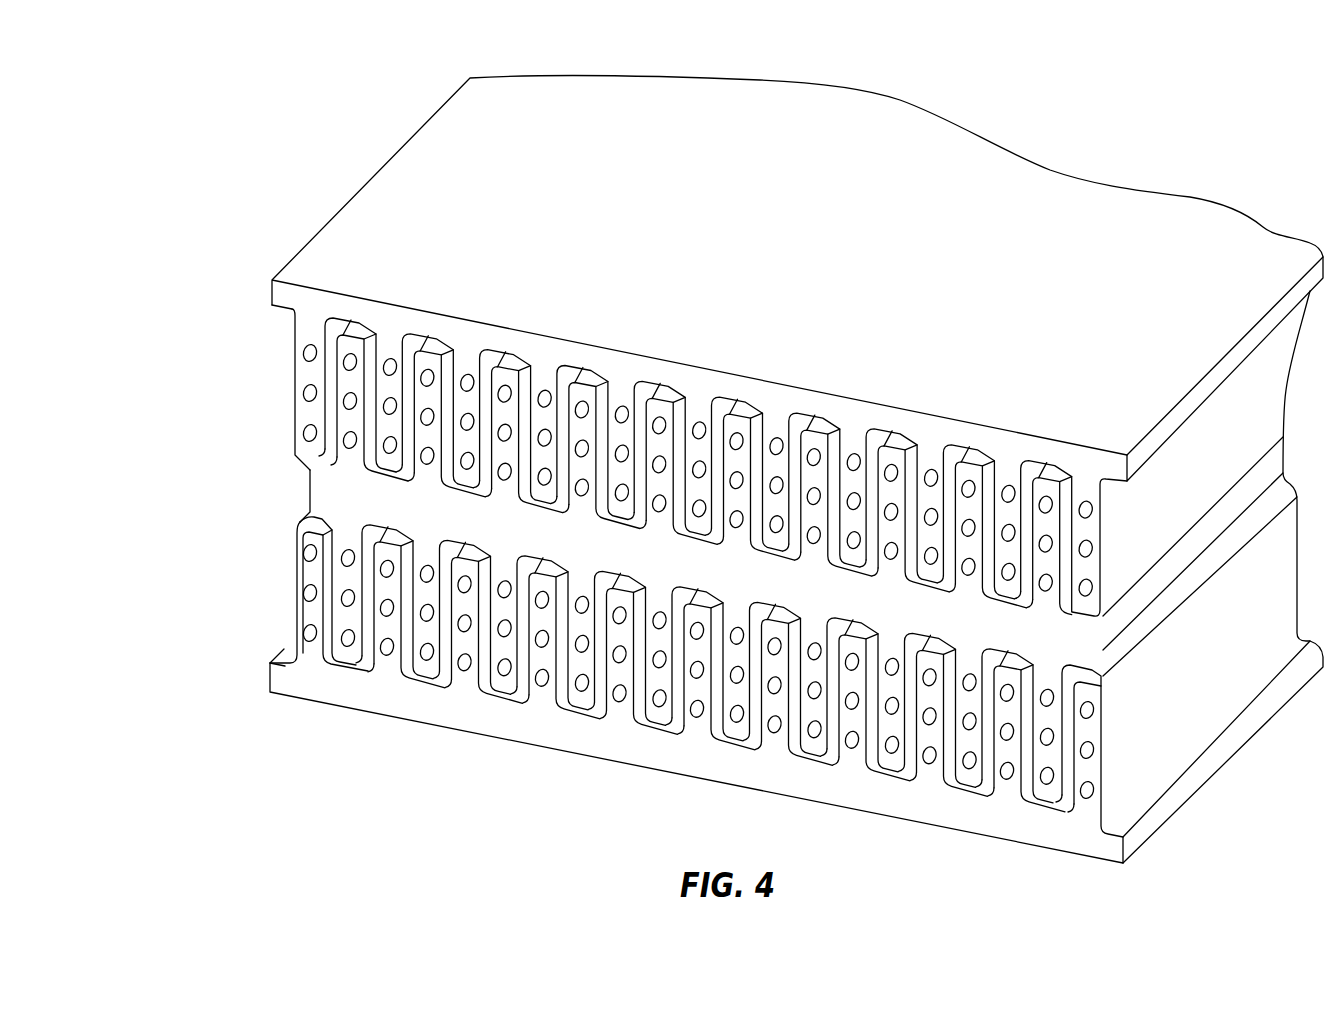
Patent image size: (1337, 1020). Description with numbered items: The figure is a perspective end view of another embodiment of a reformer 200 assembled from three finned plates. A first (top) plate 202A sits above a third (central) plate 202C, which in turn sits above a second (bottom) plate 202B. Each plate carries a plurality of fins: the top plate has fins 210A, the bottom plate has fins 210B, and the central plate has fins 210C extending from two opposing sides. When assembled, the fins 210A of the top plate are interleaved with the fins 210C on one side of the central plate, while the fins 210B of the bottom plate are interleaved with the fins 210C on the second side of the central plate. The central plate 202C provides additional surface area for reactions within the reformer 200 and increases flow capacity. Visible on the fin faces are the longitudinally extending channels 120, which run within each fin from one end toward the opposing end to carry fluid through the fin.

The reformer 200 is at (304, 150).
The first (top) plate 202A is at (312, 242).
The second (bottom) plate 202B is at (344, 708).
The third (central) plate 202C is at (308, 494).
The fins of the first plate 210A is at (298, 412).
The fins of the second plate 210B is at (297, 586).
The fins of the third plate 210C is at (355, 423).
The longitudinally extending channels 120 is at (295, 352).